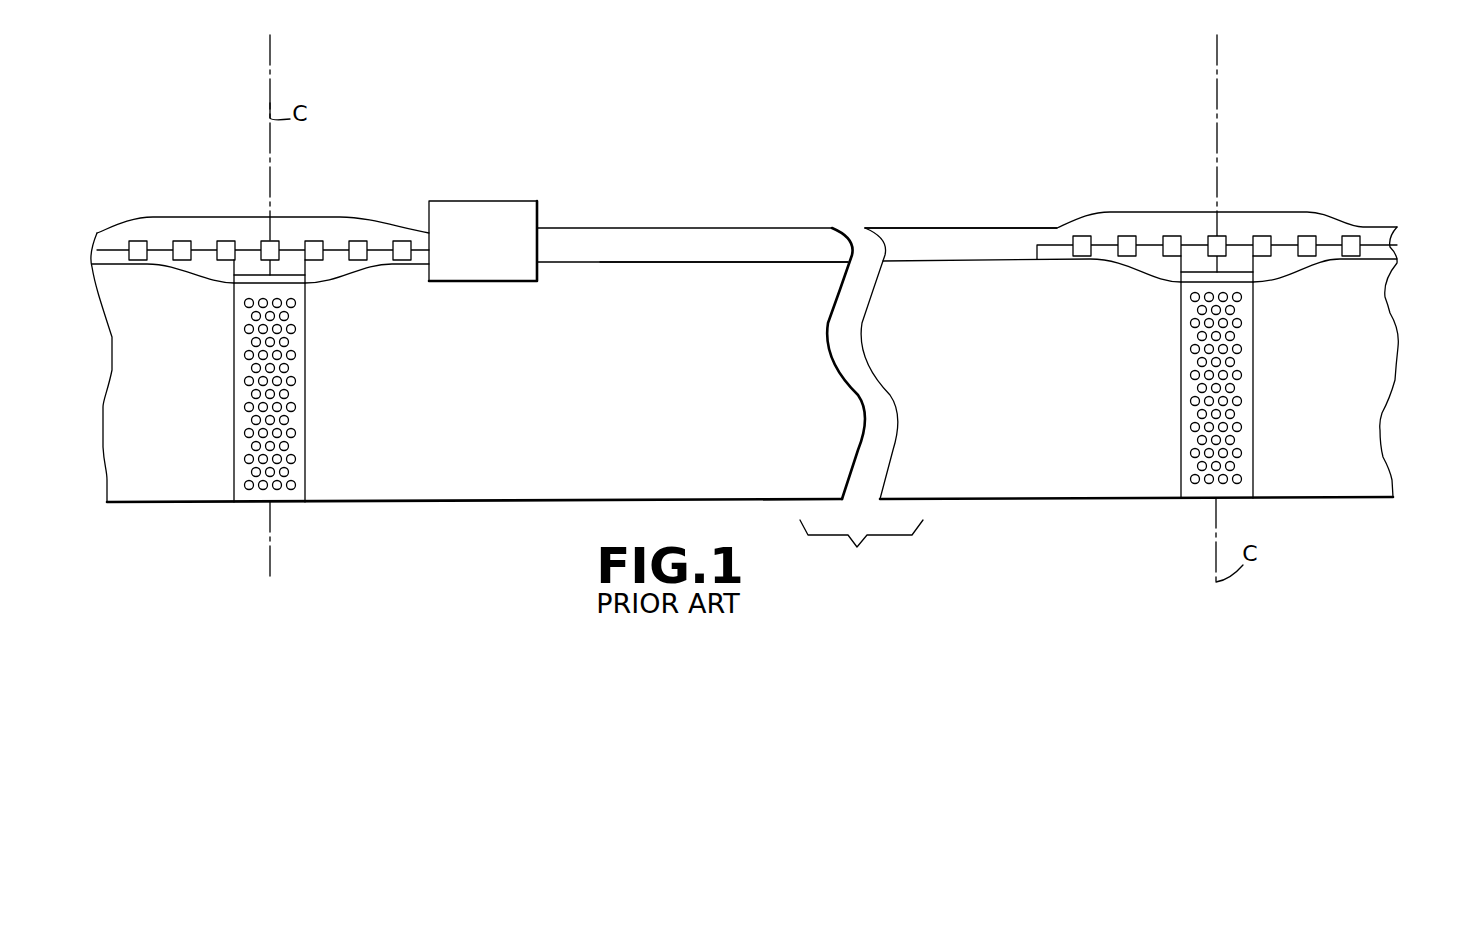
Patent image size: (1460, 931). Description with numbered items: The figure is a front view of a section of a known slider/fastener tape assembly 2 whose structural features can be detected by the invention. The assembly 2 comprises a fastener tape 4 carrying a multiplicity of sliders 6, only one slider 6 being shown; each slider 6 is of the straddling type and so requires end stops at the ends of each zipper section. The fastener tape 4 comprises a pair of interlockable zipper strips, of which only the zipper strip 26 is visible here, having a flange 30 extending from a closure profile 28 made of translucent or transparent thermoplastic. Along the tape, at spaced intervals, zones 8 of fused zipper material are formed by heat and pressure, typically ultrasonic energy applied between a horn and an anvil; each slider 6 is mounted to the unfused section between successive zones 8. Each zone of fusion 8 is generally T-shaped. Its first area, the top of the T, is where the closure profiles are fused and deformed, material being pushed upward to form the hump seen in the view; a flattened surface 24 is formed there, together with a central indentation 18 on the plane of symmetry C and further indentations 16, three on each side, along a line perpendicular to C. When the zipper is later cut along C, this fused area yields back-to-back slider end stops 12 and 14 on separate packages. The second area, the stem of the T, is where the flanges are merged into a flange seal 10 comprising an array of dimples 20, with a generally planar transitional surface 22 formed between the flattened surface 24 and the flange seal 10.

The slider/fastener tape assembly 2 is at (1248, 127).
The fastener tape 4 is at (642, 225).
The slider 6 is at (518, 200).
The zone of fusion 8 is at (213, 145).
The flange seal 10 is at (312, 392).
The slider end stop 12 is at (215, 215).
The slider end stop 14 is at (345, 215).
The indentations 16 is at (182, 260).
The central indentation 18 is at (280, 252).
The dimples 20 is at (245, 457).
The transitional surface 22 is at (243, 282).
The flattened surface 24 is at (245, 233).
The zipper strip 26 is at (978, 227).
The closure profile 28 is at (732, 245).
The flange 30 is at (1358, 423).